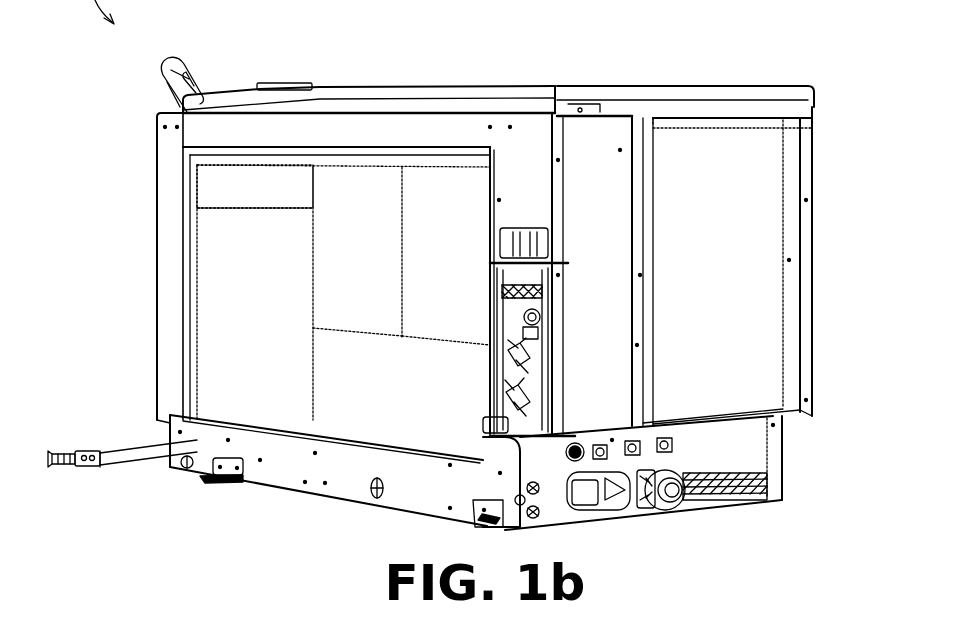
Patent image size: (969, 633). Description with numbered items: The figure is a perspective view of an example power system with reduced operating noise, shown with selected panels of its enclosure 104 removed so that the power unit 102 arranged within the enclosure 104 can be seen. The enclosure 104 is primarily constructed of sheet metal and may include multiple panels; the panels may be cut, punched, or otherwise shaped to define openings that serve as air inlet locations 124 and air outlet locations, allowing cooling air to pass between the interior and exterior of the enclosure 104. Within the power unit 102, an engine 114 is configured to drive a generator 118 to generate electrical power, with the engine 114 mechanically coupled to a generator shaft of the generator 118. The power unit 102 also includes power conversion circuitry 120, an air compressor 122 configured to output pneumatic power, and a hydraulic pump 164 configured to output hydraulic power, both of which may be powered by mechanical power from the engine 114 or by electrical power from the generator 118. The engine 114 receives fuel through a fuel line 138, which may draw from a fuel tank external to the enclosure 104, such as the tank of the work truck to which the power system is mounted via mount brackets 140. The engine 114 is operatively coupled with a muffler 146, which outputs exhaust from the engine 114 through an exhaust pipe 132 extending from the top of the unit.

The power unit 102 is at (150, 163).
The enclosure 104 is at (757, 84).
The engine 114 is at (255, 293).
The generator 118 is at (401, 390).
The power conversion circuitry 120 is at (732, 265).
The air compressor 122 is at (446, 296).
The air inlet locations 124 is at (767, 481).
The exhaust pipe 132 is at (190, 82).
The fuel line 138 is at (117, 445).
The mount brackets 140 is at (227, 487).
The muffler 146 is at (255, 186).
The hydraulic pump 164 is at (357, 252).